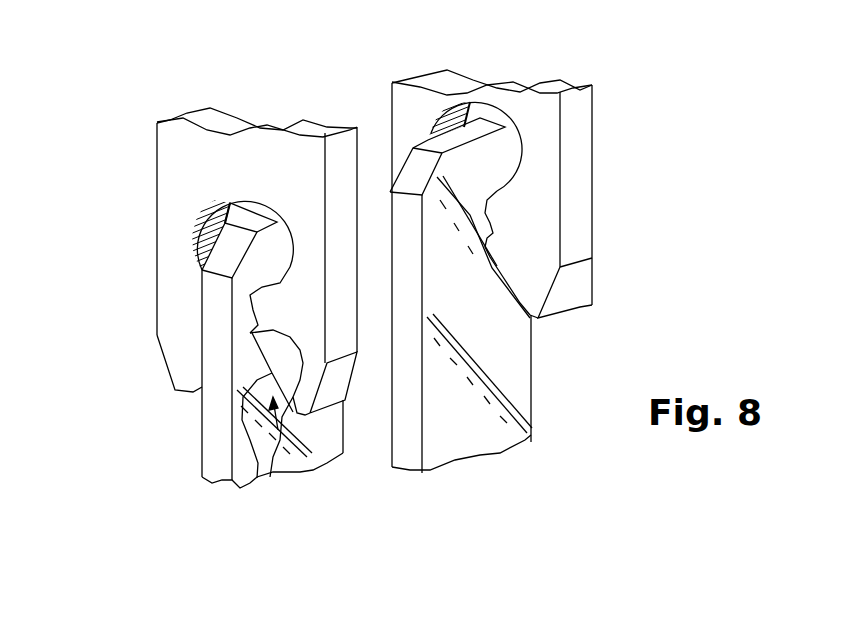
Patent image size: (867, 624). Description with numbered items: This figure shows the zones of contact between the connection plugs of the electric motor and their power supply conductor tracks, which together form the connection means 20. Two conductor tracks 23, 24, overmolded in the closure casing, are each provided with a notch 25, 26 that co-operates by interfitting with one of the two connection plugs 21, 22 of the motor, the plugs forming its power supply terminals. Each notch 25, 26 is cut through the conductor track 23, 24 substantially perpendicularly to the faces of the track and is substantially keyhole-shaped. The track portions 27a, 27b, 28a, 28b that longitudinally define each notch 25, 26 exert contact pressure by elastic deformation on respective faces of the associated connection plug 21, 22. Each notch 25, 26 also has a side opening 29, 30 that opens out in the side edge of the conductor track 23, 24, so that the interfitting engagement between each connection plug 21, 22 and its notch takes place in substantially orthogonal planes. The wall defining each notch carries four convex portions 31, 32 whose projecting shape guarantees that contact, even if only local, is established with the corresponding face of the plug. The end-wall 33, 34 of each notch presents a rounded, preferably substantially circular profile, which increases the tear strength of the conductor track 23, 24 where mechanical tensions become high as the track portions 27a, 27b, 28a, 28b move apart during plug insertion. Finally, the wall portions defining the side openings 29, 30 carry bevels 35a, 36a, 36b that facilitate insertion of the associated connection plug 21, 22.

The connection means 20 is at (671, 320).
The connection plug 21 is at (468, 297).
The connection plug 22 is at (243, 345).
The conductor track 23 is at (503, 63).
The conductor track 24 is at (257, 85).
The notch 25 is at (496, 102).
The notch 26 is at (233, 216).
The track portion 27a is at (613, 201).
The track portion 27b is at (441, 103).
The track portion 28a is at (338, 243).
The track portion 28b is at (114, 347).
The side opening 29 is at (527, 261).
The side opening 30 is at (290, 461).
The convex portion 31 is at (563, 203).
The convex portion 32 is at (296, 399).
The end-wall 33 is at (461, 92).
The end-wall 34 is at (169, 231).
The bevel 35a is at (506, 334).
The bevel 36a is at (241, 419).
The bevel 36b is at (178, 376).